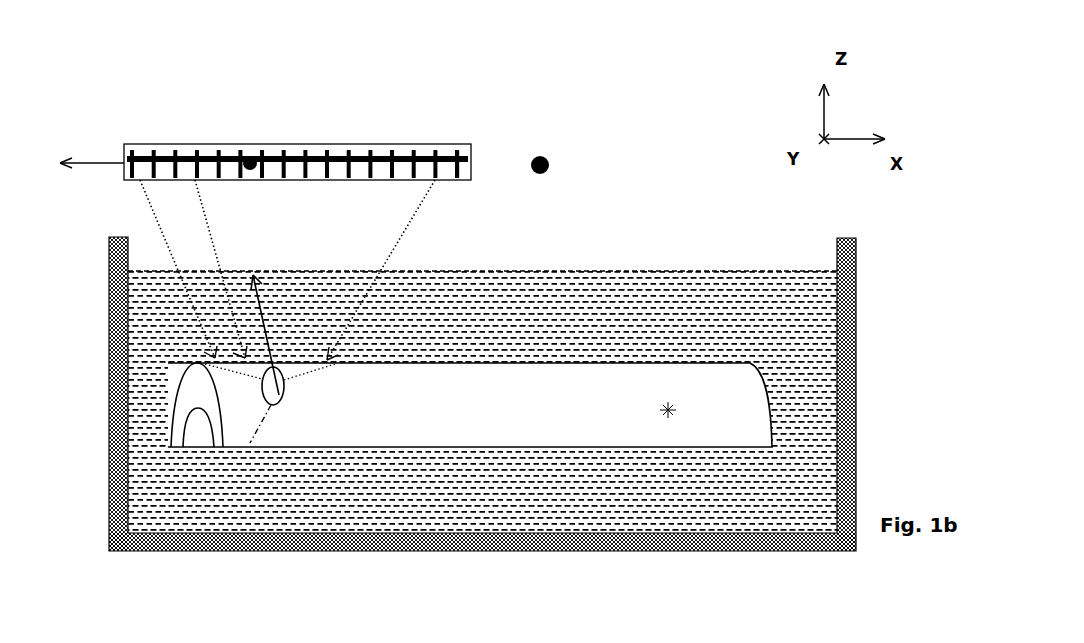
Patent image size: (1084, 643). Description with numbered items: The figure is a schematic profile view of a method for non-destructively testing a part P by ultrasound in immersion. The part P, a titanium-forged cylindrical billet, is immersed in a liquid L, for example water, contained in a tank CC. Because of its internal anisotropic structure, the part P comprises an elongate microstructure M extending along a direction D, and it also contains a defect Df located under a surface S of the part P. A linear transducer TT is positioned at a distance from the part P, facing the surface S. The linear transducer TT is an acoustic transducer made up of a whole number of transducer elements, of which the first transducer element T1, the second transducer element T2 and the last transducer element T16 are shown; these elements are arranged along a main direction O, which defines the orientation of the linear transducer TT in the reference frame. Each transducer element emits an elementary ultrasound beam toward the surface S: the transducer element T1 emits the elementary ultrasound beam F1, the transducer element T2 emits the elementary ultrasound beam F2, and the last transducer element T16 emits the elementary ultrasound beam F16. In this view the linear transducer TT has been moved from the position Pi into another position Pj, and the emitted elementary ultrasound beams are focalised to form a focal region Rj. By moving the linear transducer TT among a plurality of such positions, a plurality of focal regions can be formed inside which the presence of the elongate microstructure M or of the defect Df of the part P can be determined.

The tank CC is at (118, 257).
The surface S is at (750, 363).
The part P is at (727, 418).
The liquid L is at (203, 488).
The elongate microstructure M is at (283, 402).
The focal region Rj is at (282, 402).
The direction D is at (268, 316).
The defect Df is at (668, 420).
The linear transducer TT is at (388, 127).
The transducer element T1 is at (140, 157).
The transducer element T2 is at (196, 157).
The last transducer element T16 is at (447, 157).
The position Pj is at (252, 158).
The position Pi is at (540, 157).
The main direction O is at (91, 163).
The elementary ultrasound beam F1 is at (165, 240).
The elementary ultrasound beam F2 is at (207, 217).
The elementary ultrasound beam F16 is at (410, 220).